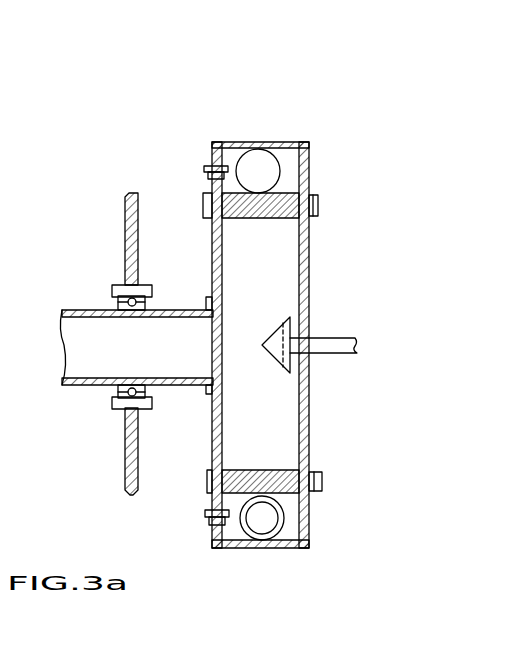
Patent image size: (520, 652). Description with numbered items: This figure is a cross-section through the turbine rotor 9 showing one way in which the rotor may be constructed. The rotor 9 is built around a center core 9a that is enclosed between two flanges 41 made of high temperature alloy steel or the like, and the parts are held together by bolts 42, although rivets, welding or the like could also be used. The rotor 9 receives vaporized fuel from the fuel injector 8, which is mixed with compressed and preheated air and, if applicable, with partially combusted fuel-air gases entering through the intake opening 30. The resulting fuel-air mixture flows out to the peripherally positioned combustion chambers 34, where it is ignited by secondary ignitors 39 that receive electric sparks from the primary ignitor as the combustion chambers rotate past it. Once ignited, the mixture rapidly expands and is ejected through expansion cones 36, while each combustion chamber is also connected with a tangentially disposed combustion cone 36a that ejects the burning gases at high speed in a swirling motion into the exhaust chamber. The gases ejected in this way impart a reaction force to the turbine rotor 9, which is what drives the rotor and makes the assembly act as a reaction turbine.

The fuel injector 8 is at (283, 322).
The turbine rotor 9 is at (308, 143).
The center core 9a is at (200, 192).
The intake opening 30 is at (310, 362).
The combustion chamber 34 is at (308, 163).
The expansion cone 36 is at (257, 541).
The combustion cone 36a is at (249, 150).
The secondary ignitor 39 is at (204, 169).
The flange 41 is at (309, 423).
The bolt 42 is at (320, 198).